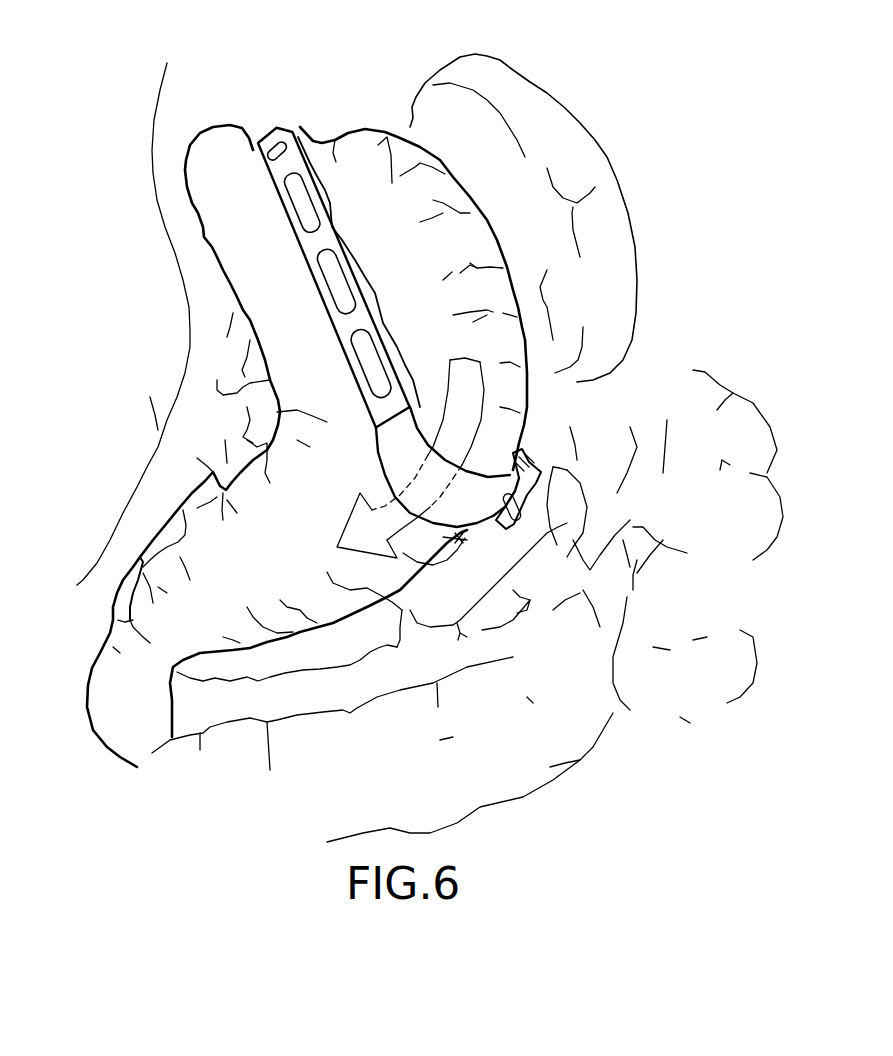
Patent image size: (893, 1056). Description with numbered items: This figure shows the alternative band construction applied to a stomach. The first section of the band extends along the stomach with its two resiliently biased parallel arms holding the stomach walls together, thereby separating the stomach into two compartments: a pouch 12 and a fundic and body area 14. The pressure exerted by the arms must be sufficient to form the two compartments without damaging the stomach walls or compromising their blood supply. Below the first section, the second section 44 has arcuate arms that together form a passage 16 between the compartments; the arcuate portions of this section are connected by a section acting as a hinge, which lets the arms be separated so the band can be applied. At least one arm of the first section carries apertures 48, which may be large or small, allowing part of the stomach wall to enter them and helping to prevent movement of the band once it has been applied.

The pouch 12 is at (277, 333).
The fundic and body area 14 is at (398, 137).
The passage 16 is at (513, 430).
The second section 44 is at (397, 472).
The apertures 48 is at (337, 130).